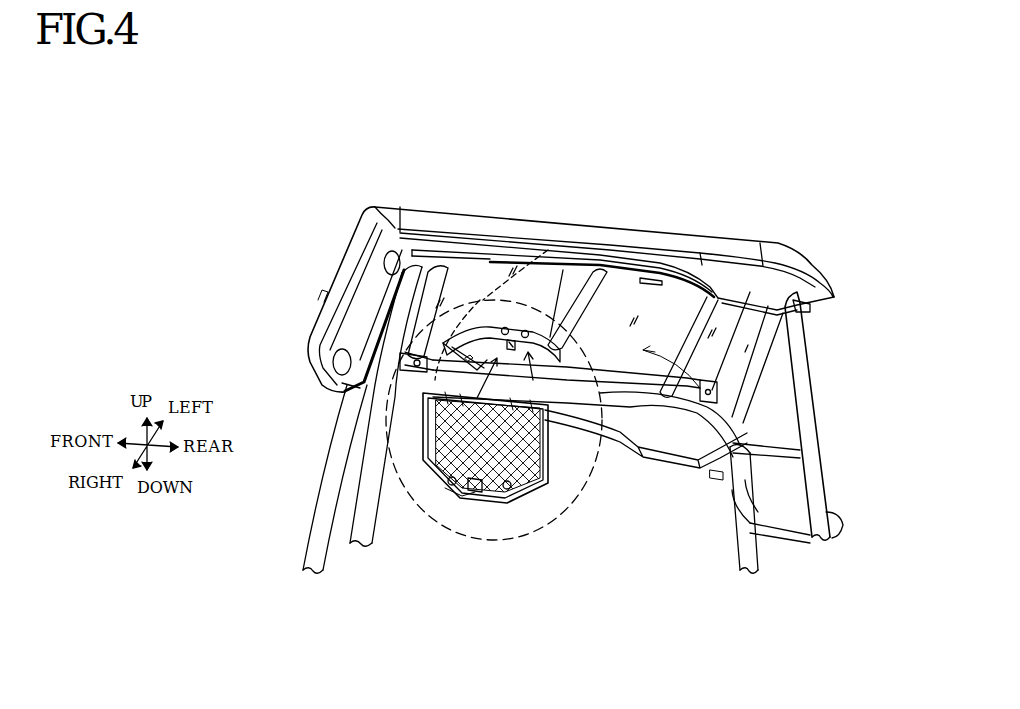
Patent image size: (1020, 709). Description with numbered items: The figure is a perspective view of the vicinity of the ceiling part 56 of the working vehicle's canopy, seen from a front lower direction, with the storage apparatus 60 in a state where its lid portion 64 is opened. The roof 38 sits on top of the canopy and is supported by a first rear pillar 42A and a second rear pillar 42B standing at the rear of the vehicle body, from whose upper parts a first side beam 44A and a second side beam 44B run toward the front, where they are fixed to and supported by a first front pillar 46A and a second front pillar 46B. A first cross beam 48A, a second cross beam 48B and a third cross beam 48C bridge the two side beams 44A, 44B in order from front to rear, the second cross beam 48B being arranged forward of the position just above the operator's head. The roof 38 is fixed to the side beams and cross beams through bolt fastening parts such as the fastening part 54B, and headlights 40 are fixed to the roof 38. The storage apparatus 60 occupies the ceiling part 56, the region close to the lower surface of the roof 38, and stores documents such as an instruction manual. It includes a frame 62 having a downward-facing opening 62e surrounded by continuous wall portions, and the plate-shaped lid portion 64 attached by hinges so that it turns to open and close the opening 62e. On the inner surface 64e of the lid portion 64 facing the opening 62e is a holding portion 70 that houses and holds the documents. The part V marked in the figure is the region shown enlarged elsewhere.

The roof 38 is at (745, 243).
The headlights 40 is at (385, 268).
The first rear pillar 42A is at (804, 427).
The second rear pillar 42B is at (735, 540).
The first side beam 44A is at (400, 207).
The second side beam 44B is at (622, 433).
The first front pillar 46A is at (362, 530).
The second front pillar 46B is at (320, 513).
The first cross beam 48A is at (480, 280).
The second cross beam 48B is at (600, 292).
The third cross beam 48C is at (690, 330).
The fastening part 54B is at (688, 397).
The ceiling part 56 is at (728, 400).
The storage apparatus 60 is at (510, 305).
The frame 62 is at (600, 280).
The opening 62e is at (336, 364).
The lid portion 64 is at (525, 485).
The inner surface 64e is at (468, 500).
The holding portion 70 is at (450, 487).
The part V is at (567, 510).